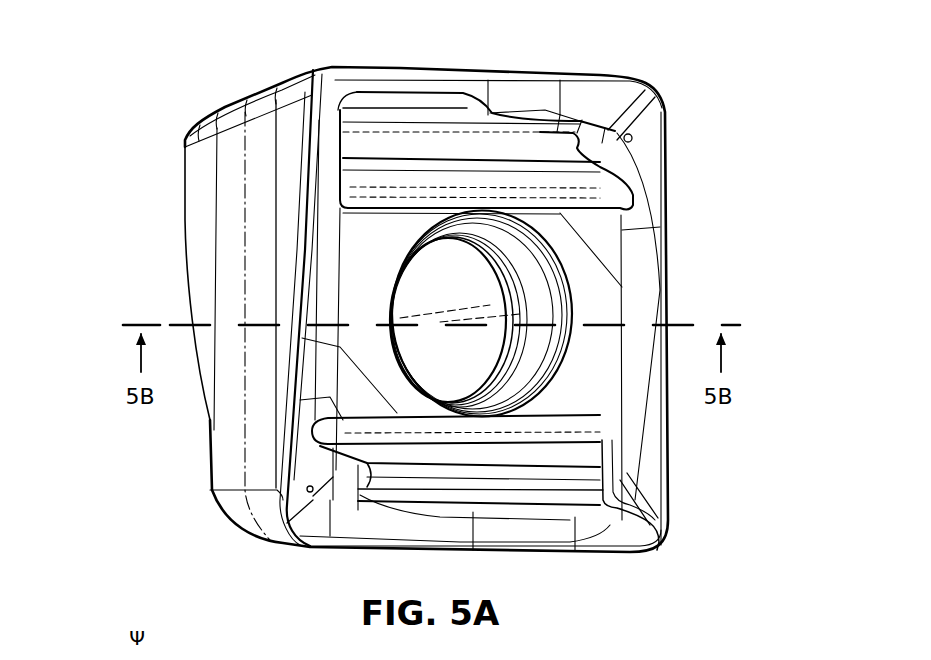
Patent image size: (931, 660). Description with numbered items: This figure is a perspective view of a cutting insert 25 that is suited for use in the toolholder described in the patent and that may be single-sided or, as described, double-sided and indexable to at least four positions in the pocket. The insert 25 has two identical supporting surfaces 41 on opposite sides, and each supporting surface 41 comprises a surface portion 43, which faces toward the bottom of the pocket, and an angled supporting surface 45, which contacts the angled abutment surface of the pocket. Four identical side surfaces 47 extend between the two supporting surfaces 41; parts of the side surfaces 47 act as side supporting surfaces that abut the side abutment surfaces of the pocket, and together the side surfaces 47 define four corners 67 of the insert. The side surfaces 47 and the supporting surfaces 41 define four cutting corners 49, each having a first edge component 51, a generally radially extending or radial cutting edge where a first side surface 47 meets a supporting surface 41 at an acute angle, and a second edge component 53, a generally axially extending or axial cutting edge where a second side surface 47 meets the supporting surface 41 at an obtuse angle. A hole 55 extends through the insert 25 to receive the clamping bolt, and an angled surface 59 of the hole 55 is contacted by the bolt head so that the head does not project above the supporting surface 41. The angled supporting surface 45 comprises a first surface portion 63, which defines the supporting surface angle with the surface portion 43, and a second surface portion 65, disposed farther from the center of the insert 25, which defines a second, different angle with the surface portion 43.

The cutting insert 25 is at (121, 109).
The supporting surface 41 is at (411, 211).
The surface portion 43 is at (374, 262).
The angled supporting surface 45 is at (550, 170).
The side surface 47 is at (237, 260).
The cutting corner 49 is at (190, 125).
The first edge component 51 is at (368, 70).
The second edge component 53 is at (302, 178).
The hole 55 is at (487, 352).
The angled surface 59 is at (535, 290).
The first surface portion 63 is at (565, 185).
The second surface portion 65 is at (535, 150).
The corner 67 is at (246, 112).